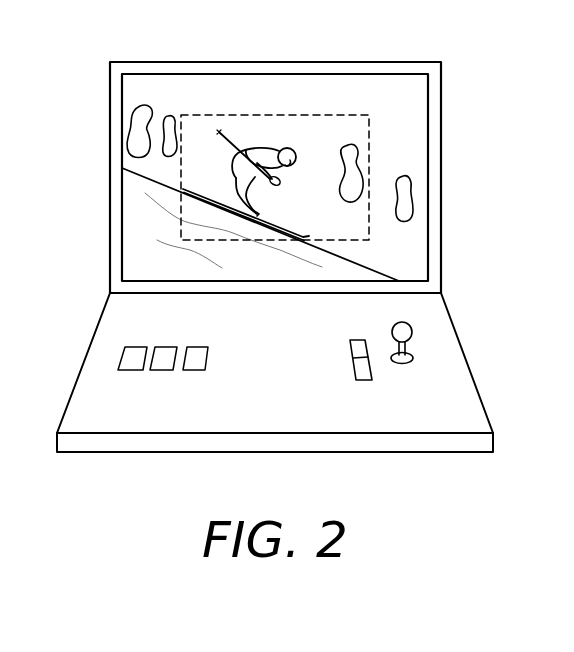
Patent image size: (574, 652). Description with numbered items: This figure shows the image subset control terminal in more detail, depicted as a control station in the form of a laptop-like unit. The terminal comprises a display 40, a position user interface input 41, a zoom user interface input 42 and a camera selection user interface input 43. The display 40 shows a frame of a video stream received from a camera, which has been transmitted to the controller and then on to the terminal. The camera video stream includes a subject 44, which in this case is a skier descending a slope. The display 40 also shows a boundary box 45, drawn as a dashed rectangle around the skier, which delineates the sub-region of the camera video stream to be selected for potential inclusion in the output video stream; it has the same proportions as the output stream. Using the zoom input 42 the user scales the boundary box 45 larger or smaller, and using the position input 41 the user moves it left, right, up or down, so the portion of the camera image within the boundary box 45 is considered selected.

The display 40 is at (110, 73).
The position user interface input 41 is at (411, 325).
The zoom user interface input 42 is at (362, 372).
The camera selection user interface input 43 is at (162, 375).
The subject 44 is at (283, 149).
The boundary box 45 is at (367, 116).